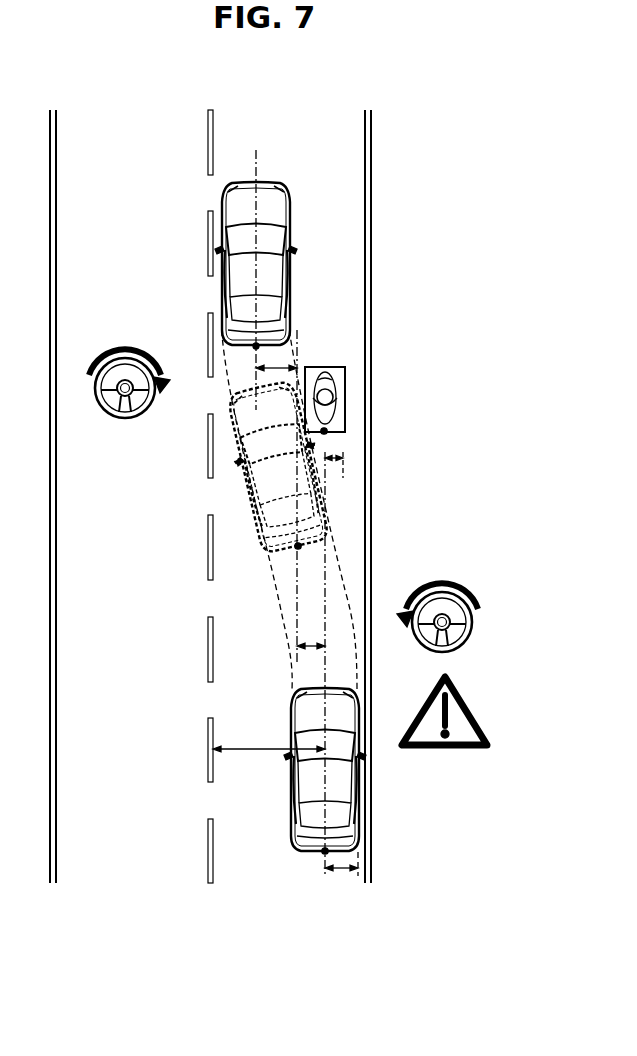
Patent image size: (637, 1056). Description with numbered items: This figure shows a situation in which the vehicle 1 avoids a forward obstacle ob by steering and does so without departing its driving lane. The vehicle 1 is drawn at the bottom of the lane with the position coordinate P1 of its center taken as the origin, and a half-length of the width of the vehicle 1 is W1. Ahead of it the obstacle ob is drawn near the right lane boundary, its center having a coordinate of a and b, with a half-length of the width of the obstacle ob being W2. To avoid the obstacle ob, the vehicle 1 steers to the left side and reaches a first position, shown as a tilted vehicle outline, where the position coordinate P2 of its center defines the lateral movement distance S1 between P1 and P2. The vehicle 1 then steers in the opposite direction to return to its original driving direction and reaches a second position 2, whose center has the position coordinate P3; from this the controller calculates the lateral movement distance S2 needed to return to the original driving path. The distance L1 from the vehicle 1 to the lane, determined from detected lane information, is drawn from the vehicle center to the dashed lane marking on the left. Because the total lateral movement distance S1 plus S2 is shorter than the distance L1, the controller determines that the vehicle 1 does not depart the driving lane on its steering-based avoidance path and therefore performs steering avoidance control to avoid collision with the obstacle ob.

The vehicle 1 is at (347, 775).
The position ② 2 is at (290, 213).
The obstacle ob is at (331, 397).
The position coordinate of the center of the vehicle P1 is at (325, 853).
The position coordinate of the center of the vehicle after steering avoidance P2 is at (298, 548).
The position coordinate of the center of the vehicle at position ② P3 is at (245, 339).
The lateral movement distance S1 is at (297, 650).
The lateral movement distance S2 is at (279, 366).
The half-length of the width of the vehicle W1 is at (342, 872).
The half-length of the width of the obstacle W2 is at (338, 462).
The distance from the vehicle to the lane L1 is at (269, 739).